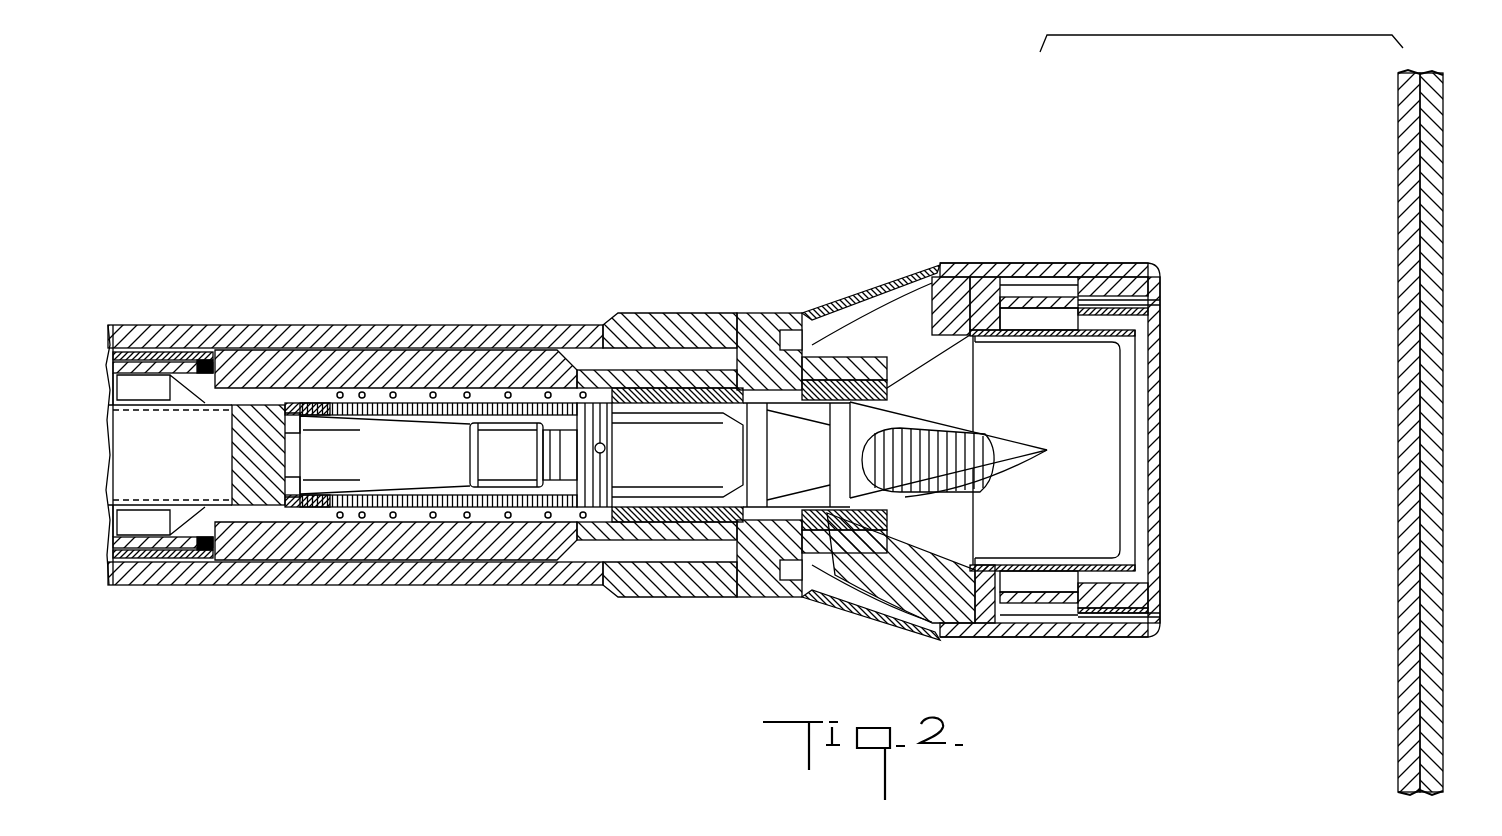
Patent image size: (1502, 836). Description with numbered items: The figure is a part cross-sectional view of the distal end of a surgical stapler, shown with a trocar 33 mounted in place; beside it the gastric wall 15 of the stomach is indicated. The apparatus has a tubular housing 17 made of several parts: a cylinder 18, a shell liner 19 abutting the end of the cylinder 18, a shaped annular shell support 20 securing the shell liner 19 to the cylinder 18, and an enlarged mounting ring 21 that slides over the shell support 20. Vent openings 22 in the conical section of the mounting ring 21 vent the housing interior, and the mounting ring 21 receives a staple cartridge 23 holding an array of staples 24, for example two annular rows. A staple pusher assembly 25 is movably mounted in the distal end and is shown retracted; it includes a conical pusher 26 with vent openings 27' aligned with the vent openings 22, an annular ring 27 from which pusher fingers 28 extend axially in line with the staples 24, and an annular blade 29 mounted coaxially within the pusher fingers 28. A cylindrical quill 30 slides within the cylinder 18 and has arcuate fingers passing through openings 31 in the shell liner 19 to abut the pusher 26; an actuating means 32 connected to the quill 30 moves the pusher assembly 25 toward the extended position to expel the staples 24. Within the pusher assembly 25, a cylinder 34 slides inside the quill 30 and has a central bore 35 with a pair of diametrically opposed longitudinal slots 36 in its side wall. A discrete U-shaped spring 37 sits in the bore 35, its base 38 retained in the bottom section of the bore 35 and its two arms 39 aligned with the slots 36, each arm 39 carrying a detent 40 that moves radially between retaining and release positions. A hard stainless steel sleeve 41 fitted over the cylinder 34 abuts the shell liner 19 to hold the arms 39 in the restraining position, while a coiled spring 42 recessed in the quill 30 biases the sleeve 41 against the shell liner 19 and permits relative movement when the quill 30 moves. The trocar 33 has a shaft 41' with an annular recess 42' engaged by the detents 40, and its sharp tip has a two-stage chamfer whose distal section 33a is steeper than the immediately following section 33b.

The gastric wall 15 is at (1435, 572).
The tubular housing 17 is at (360, 604).
The cylinder 18 is at (290, 332).
The shell liner 19 is at (740, 350).
The shell support 20 is at (620, 312).
The mounting ring 21 is at (978, 290).
The vent openings 22 is at (880, 290).
The staple cartridge 23 is at (1160, 268).
The staples 24 is at (1160, 305).
The staple pusher assembly 25 is at (999, 546).
The pusher 26 is at (930, 553).
The annular ring 27 is at (904, 623).
The vent openings 27' is at (891, 338).
The pusher fingers 28 is at (1032, 298).
The annular blade 29 is at (1098, 378).
The quill 30 is at (488, 357).
The openings 31 is at (775, 478).
The actuating means 32 is at (130, 357).
The trocar 33 is at (1027, 428).
The distal section 33a is at (1025, 462).
The immediately following section 33b is at (968, 488).
The cylinder 34 is at (147, 495).
The central bore 35 is at (670, 403).
The longitudinal slots 36 is at (357, 500).
The U-shaped spring 37 is at (258, 403).
The base 38 is at (296, 443).
The arms 39 is at (435, 503).
The detent 40 is at (595, 393).
The sleeve 41 is at (677, 524).
The shaft 41' is at (498, 484).
The coiled spring 42 is at (438, 520).
The annular recess 42' is at (606, 455).